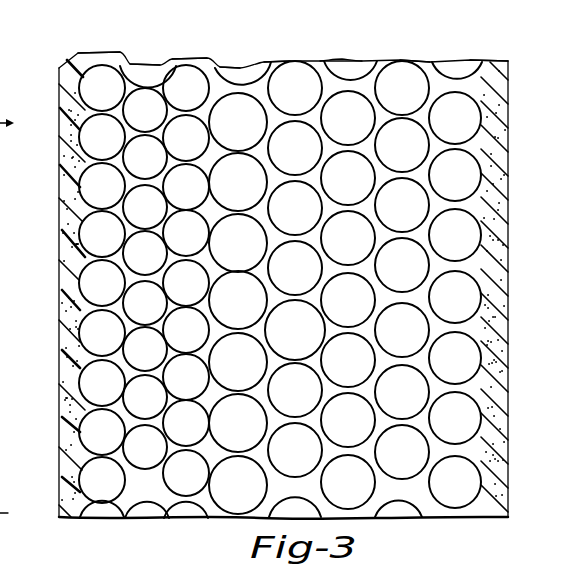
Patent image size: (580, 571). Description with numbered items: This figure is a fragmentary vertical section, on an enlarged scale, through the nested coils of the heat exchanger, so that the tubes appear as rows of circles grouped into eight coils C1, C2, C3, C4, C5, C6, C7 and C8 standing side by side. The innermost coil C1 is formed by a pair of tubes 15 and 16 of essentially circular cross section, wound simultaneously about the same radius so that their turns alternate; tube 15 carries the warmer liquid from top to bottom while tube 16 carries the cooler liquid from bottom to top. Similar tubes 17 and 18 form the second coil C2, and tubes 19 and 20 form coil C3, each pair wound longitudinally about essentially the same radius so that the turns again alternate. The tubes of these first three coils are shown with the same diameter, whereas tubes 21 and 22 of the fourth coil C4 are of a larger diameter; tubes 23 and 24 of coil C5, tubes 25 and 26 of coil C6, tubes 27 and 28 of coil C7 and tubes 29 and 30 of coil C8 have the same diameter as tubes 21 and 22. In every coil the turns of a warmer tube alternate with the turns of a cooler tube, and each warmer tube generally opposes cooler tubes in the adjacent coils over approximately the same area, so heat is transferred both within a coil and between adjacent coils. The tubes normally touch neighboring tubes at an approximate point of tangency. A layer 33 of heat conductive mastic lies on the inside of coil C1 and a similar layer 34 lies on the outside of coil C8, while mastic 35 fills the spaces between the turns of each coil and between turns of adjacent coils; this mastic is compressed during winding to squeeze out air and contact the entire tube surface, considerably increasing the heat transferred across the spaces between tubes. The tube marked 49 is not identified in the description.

The tube 15 is at (90, 138).
The tube 16 is at (90, 88).
The tube 17 is at (133, 120).
The tube 18 is at (133, 167).
The tube 19 is at (174, 293).
The tube 20 is at (174, 148).
The tube 21 is at (226, 141).
The tube 22 is at (226, 253).
The tube 23 is at (283, 98).
The tube 24 is at (283, 287).
The tube 25 is at (336, 137).
The tube 26 is at (336, 188).
The tube 27 is at (390, 107).
The tube 28 is at (390, 155).
The tube 29 is at (443, 185).
The tube 30 is at (443, 137).
The layer of heat conductive mastic 33 is at (60, 215).
The layer of heat conductive mastic 34 is at (510, 322).
The mastic 35 is at (212, 96).
The tube 49 is at (174, 98).
The coil C1 is at (108, 46).
The coil C2 is at (158, 56).
The coil C3 is at (198, 52).
The coil C4 is at (244, 55).
The coil C5 is at (304, 54).
The coil C6 is at (353, 55).
The coil C7 is at (408, 54).
The coil C8 is at (473, 54).